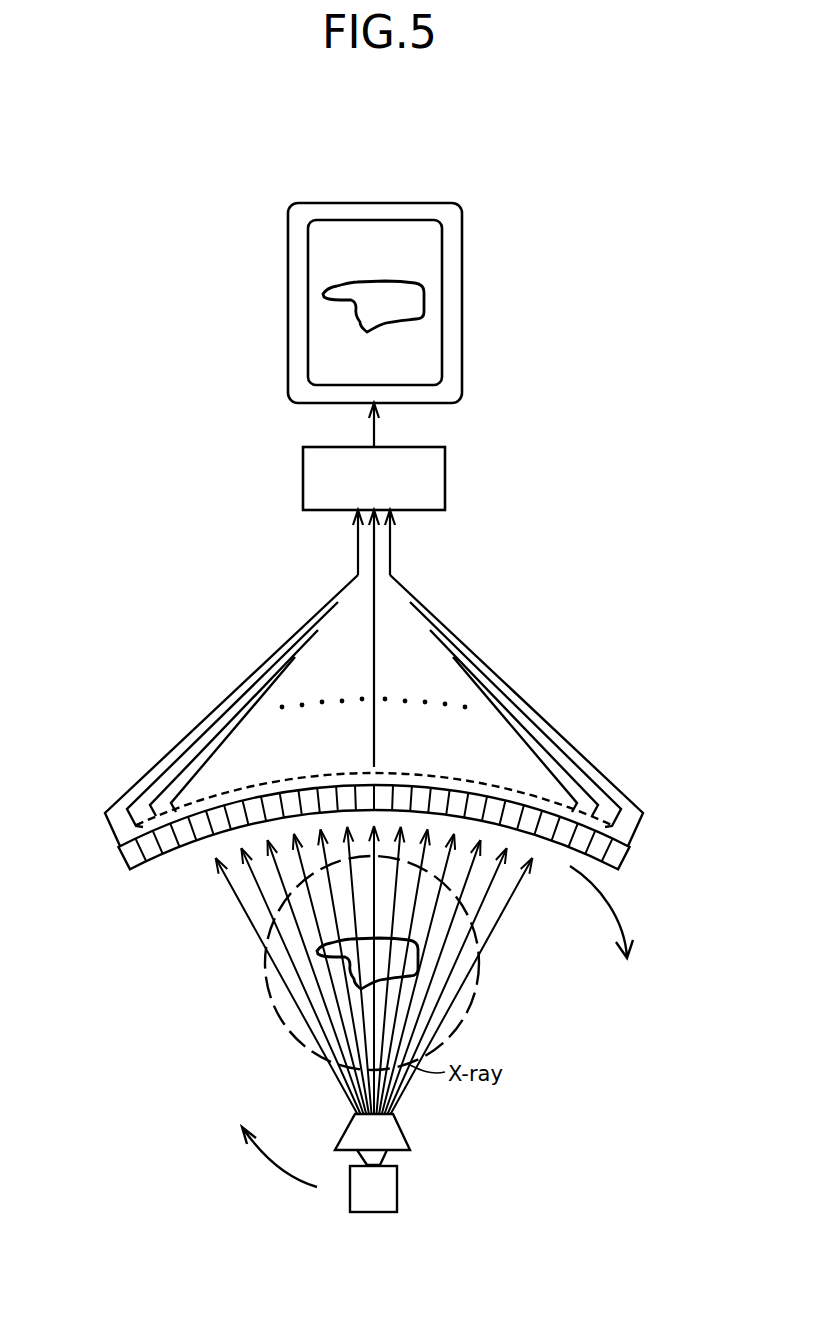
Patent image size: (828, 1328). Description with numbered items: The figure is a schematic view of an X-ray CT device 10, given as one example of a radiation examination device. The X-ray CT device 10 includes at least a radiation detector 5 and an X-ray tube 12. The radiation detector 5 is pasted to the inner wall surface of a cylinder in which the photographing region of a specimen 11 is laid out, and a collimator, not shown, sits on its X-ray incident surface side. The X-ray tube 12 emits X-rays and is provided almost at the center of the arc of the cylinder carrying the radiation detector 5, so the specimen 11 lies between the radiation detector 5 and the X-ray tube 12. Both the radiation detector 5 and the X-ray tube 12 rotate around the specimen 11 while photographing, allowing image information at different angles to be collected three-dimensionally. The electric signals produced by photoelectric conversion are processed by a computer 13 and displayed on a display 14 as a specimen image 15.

The radiation detector 5 is at (111, 867).
The X-ray CT device 10 is at (593, 583).
The specimen 11 is at (408, 950).
The X-ray tube 12 is at (397, 1190).
The computer 13 is at (445, 478).
The display 14 is at (440, 253).
The specimen image 15 is at (410, 300).